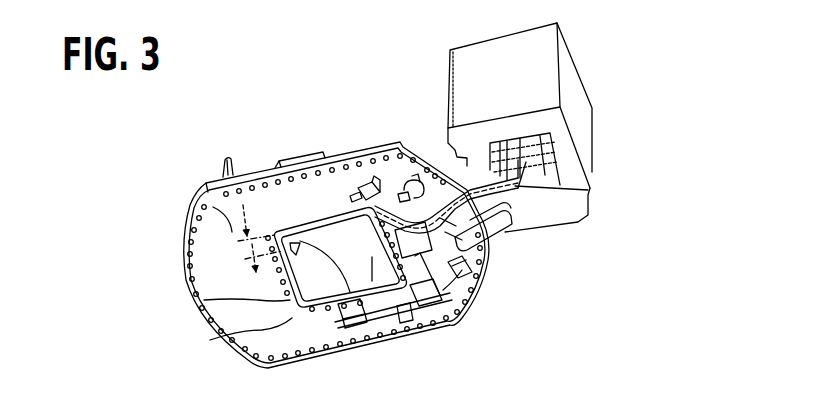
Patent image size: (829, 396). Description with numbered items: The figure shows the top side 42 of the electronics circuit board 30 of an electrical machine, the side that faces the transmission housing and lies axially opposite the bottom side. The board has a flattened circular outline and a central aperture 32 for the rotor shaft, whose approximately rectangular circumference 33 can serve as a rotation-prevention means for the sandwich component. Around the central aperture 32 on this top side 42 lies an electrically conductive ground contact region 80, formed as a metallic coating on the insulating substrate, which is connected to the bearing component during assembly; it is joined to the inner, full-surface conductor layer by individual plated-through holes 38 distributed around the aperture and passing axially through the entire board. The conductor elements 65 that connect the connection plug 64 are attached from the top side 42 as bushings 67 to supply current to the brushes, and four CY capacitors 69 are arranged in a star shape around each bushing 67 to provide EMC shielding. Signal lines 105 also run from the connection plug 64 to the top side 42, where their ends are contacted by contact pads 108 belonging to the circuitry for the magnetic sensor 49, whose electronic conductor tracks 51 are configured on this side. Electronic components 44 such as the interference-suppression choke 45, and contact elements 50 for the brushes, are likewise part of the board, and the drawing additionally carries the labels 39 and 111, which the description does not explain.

The electronics circuit board 30 is at (200, 214).
The central aperture 32 is at (440, 312).
The rectangular circumference 33 is at (357, 318).
The plated-through holes (VIAS) 38 is at (290, 303).
The partition wall 39 is at (237, 268).
The top side 42 is at (216, 284).
The electronic components 44 is at (278, 232).
The interference-suppression choke 45 is at (291, 158).
The magnetic sensor 49 is at (260, 238).
The contact elements 50 is at (214, 172).
The electronic conductor tracks 51 is at (400, 322).
The connection plug 64 is at (573, 98).
The conductor elements 65 is at (465, 164).
The bushings 67 is at (358, 182).
The CY capacitors 69 is at (406, 176).
The ground contact region 80 is at (287, 288).
The signal lines 105 is at (502, 226).
The contact pads 108 is at (474, 266).
The wall section 111 is at (470, 302).